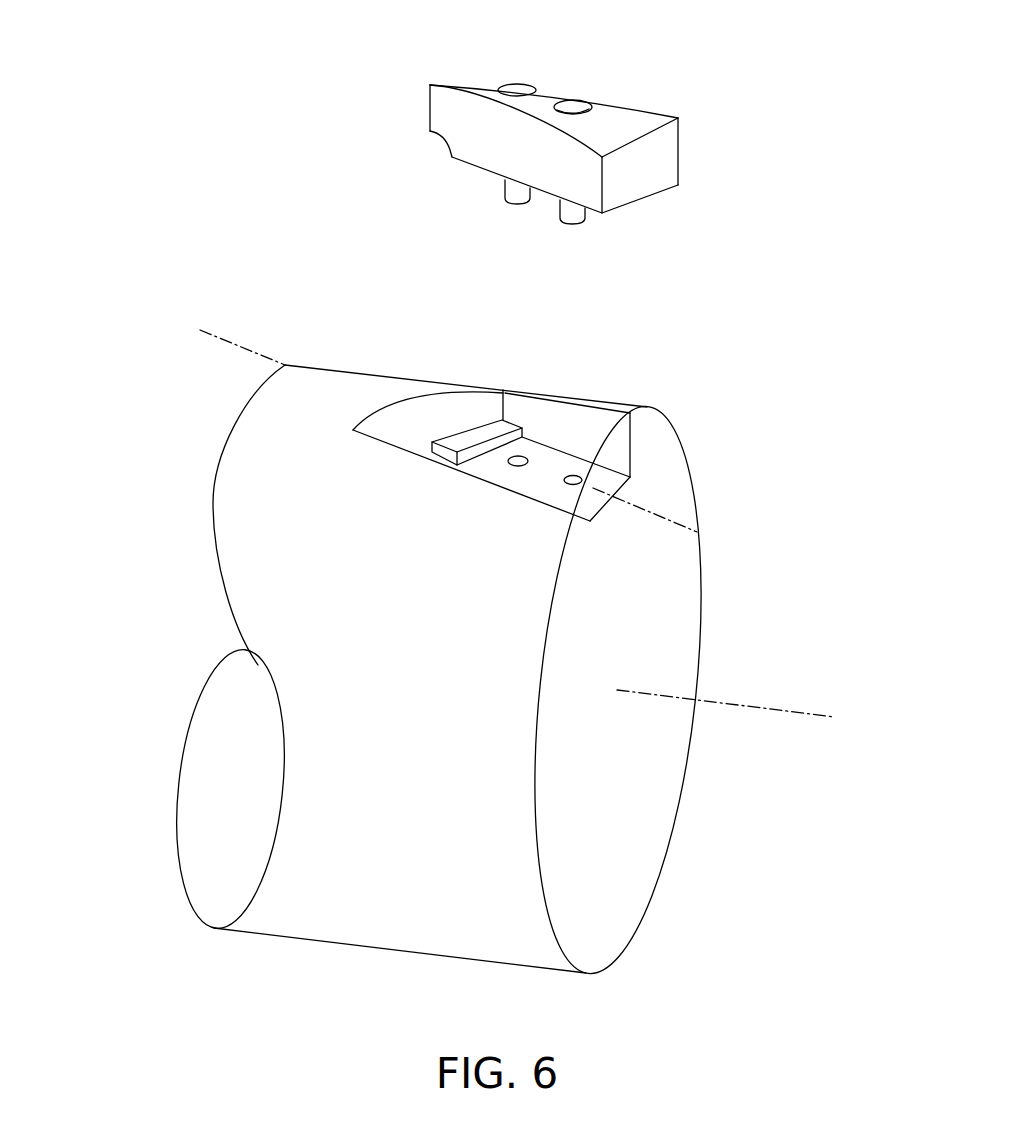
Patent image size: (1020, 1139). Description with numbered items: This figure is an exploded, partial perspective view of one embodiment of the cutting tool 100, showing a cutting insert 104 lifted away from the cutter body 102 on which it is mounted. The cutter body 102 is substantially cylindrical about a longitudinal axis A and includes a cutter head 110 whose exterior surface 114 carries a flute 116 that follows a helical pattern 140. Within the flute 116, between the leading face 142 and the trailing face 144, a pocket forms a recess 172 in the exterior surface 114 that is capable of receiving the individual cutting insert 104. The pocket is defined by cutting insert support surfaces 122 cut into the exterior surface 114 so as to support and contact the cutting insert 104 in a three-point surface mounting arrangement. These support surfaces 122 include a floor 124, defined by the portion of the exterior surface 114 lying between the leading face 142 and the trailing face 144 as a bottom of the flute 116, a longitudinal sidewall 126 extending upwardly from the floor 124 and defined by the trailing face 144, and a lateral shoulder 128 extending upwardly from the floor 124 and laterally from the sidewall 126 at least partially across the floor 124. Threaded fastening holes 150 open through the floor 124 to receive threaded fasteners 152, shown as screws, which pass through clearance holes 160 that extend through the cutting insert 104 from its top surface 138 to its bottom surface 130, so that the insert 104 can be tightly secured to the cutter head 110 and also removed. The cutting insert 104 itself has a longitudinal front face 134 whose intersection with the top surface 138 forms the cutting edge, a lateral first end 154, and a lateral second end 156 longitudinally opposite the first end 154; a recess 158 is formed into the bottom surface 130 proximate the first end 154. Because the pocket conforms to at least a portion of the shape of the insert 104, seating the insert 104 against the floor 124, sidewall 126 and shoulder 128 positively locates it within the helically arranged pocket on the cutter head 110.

The cutting tool 100 is at (853, 77).
The cutter body 102 is at (184, 533).
The cutting insert 104 is at (705, 93).
The cutter head 110 is at (206, 388).
The exterior surface 114 is at (448, 492).
The flute 116 is at (687, 411).
The cutting insert support surfaces 122 is at (431, 371).
The floor 124 is at (603, 507).
The longitudinal sidewall 126 is at (553, 418).
The lateral shoulder 128 is at (443, 455).
The bottom surface 130 is at (645, 200).
The longitudinal front face 134 is at (503, 148).
The top surface 138 is at (625, 117).
The helical pattern 140 is at (232, 345).
The leading face 142 is at (503, 490).
The trailing face 144 is at (617, 412).
The threaded fastening holes 150 is at (570, 488).
The threaded fasteners 152 is at (515, 205).
The lateral first end 154 is at (430, 85).
The lateral second end 156 is at (668, 163).
The recess 158 is at (437, 135).
The clearance holes 160 is at (519, 84).
The recess 172 is at (521, 389).
The longitudinal axis A is at (777, 708).